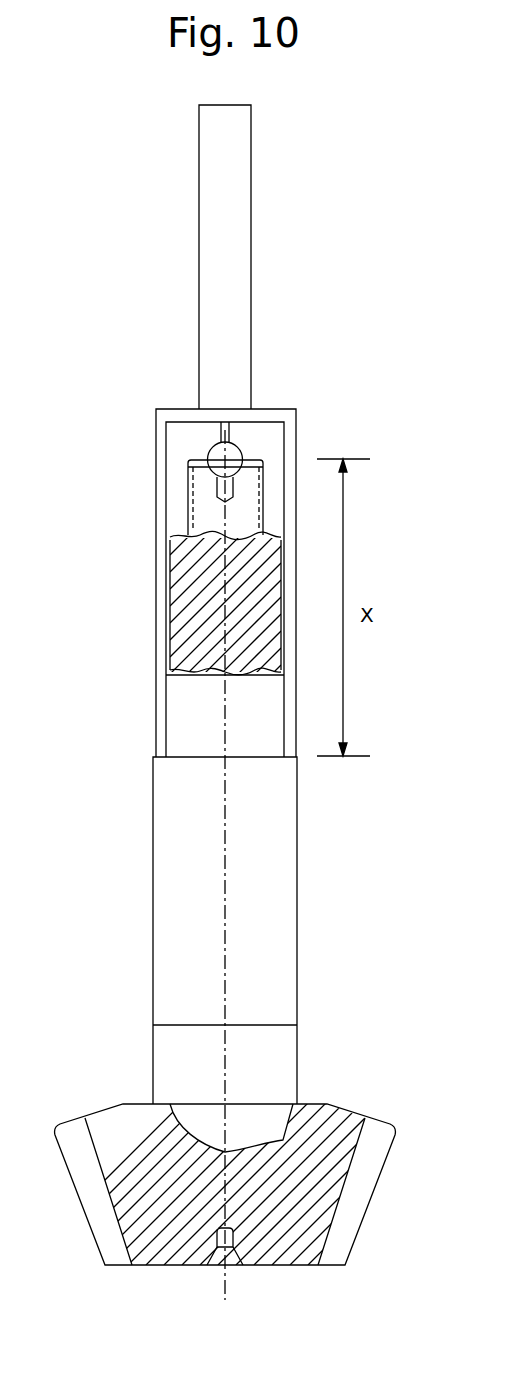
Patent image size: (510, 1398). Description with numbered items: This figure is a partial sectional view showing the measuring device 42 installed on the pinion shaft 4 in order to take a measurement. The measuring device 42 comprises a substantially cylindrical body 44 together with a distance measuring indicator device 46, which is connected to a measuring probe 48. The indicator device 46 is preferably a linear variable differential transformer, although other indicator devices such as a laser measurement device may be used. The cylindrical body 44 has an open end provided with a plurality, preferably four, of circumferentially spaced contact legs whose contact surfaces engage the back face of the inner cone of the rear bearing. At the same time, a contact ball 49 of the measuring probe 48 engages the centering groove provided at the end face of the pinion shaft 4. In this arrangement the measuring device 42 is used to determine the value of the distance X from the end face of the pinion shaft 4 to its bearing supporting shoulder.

The pinion shaft 4 is at (303, 900).
The measuring device 42 is at (303, 422).
The cylindrical body 44 is at (156, 565).
The distance measuring indicator device 46 is at (251, 237).
The measuring probe 48 is at (218, 432).
The contact ball 49 is at (208, 452).